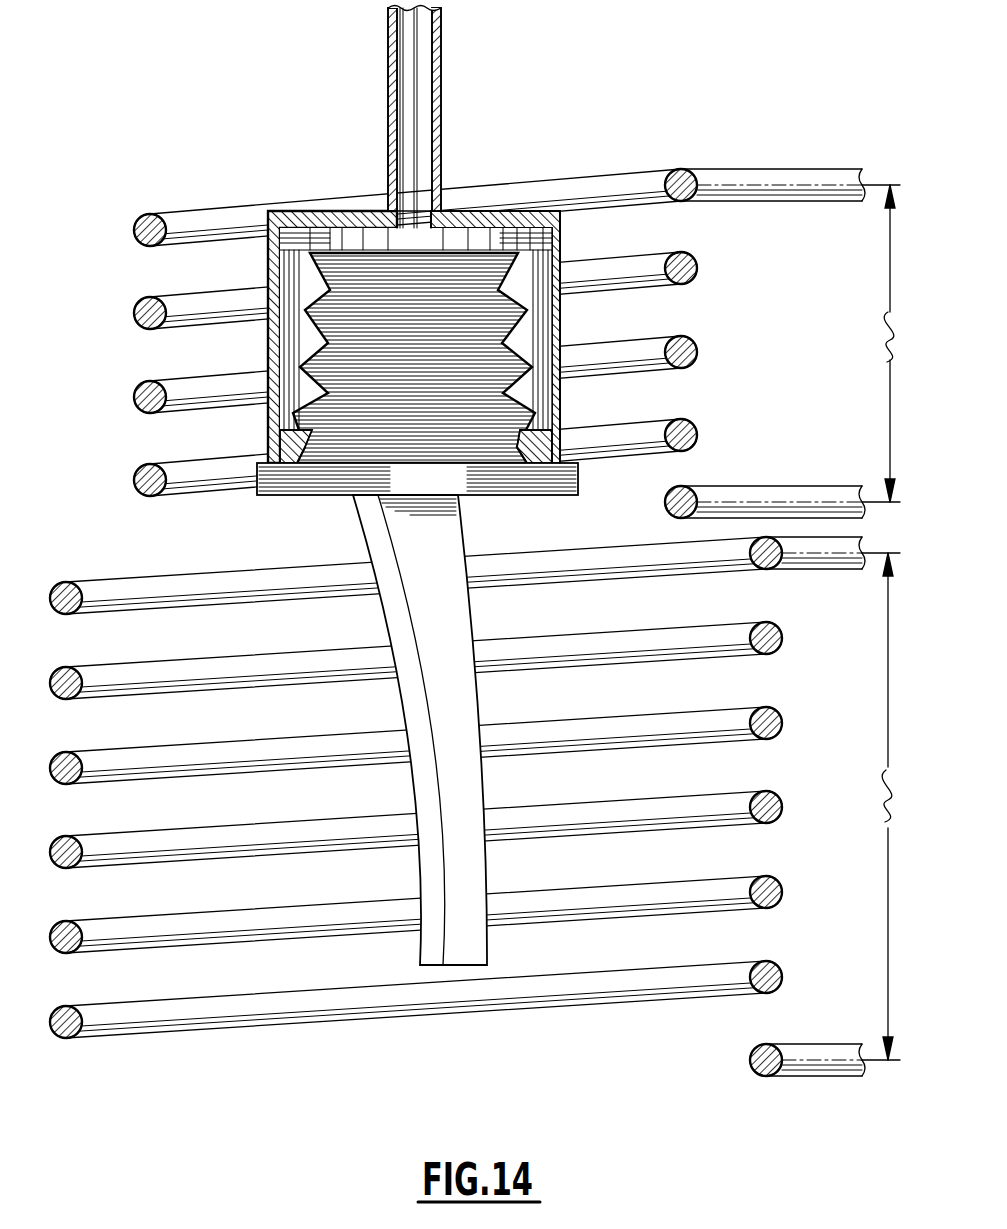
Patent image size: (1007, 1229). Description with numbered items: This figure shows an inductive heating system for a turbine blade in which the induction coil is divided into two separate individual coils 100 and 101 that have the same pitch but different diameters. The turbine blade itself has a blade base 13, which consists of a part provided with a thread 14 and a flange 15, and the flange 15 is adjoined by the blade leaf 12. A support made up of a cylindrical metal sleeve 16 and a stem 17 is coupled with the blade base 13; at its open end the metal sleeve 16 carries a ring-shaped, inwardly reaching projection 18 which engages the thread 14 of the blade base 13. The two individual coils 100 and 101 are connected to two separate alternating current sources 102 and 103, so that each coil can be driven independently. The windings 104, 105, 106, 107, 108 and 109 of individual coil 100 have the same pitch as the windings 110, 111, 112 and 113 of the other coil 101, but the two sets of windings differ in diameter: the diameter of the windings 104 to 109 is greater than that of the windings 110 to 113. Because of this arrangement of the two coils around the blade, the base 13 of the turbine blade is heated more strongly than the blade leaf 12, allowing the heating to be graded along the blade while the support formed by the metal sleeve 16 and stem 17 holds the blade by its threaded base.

The blade leaf 12 is at (473, 783).
The blade base 13 is at (482, 235).
The thread 14 is at (323, 247).
The flange 15 is at (318, 483).
The cylindrical metal sleeve 16 is at (560, 234).
The stem 17 is at (442, 80).
The ring-shaped inwardly reaching projection 18 is at (535, 450).
The individual coil 100 is at (457, 836).
The individual coil 101 is at (499, 275).
The alternating current source 102 is at (878, 803).
The alternating current source 103 is at (884, 341).
The winding 104 is at (782, 977).
The winding 105 is at (782, 892).
The winding 106 is at (782, 807).
The winding 107 is at (782, 723).
The winding 108 is at (782, 638).
The winding 109 is at (688, 570).
The winding 110 is at (697, 435).
The winding 111 is at (697, 352).
The winding 112 is at (697, 268).
The winding 113 is at (683, 170).